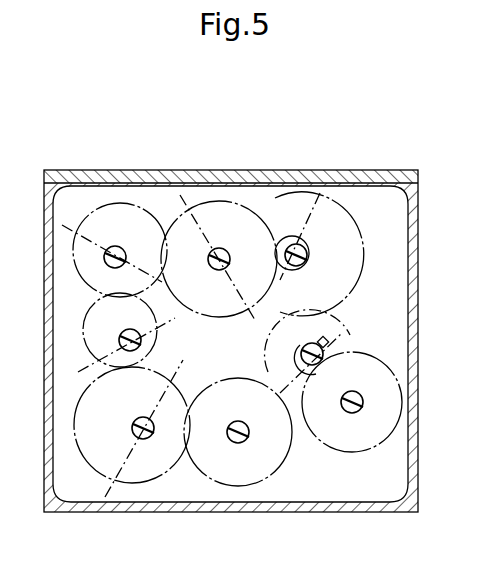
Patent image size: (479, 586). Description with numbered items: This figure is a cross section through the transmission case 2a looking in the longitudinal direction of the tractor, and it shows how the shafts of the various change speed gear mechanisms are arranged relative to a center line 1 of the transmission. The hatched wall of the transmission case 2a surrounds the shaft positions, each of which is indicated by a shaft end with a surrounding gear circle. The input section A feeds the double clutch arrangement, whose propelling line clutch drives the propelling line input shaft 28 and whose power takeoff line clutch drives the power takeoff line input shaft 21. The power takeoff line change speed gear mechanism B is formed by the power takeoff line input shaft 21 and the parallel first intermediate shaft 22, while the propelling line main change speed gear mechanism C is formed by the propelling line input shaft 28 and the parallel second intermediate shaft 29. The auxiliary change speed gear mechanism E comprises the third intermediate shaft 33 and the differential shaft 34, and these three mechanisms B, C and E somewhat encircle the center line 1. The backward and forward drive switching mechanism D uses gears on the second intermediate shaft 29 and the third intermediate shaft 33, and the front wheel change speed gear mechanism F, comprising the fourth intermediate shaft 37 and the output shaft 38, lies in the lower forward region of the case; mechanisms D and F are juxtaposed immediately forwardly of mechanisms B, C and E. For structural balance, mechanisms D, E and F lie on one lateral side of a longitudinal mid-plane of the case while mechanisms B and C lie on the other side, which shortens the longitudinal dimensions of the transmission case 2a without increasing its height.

The center line 1 is at (204, 331).
The transmission case 2a is at (408, 170).
The power takeoff line input shaft 21 is at (326, 346).
The first intermediate shaft 22 is at (352, 413).
The propelling line input shaft 28 is at (297, 244).
The second intermediate shaft 29 is at (219, 247).
The third intermediate shaft 33 is at (115, 246).
The differential shaft 34 is at (142, 343).
The fourth intermediate shaft 37 is at (147, 440).
The output shaft 38 is at (240, 443).
The input section A is at (343, 302).
The power takeoff line change speed gear mechanism B is at (343, 346).
The propelling line main change speed gear mechanism C is at (285, 229).
The backward and forward drive switching mechanism D is at (163, 221).
The auxiliary change speed gear mechanism E is at (93, 298).
The front wheel change speed gear mechanism F is at (183, 463).